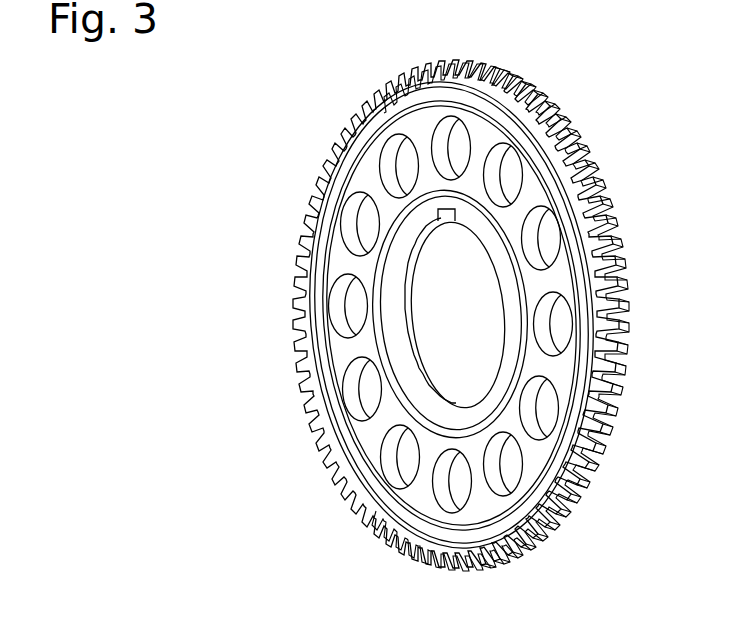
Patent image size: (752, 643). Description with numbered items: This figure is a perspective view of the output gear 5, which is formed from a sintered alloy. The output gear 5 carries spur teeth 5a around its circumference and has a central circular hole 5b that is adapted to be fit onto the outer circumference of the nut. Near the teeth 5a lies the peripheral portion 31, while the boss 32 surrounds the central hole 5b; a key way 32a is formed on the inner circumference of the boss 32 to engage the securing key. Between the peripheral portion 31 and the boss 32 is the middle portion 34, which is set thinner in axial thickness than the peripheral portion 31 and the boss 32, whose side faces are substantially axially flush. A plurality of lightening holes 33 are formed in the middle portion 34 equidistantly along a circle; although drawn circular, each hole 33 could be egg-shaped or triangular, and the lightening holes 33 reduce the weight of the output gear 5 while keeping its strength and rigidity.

The output gear 5 is at (308, 162).
The spur teeth 5a is at (472, 62).
The central hole 5b is at (440, 393).
The peripheral portion 31 is at (313, 262).
The boss 32 is at (380, 345).
The key way 32a is at (445, 223).
The lightening holes 33 is at (493, 170).
The middle portion 34 is at (367, 437).